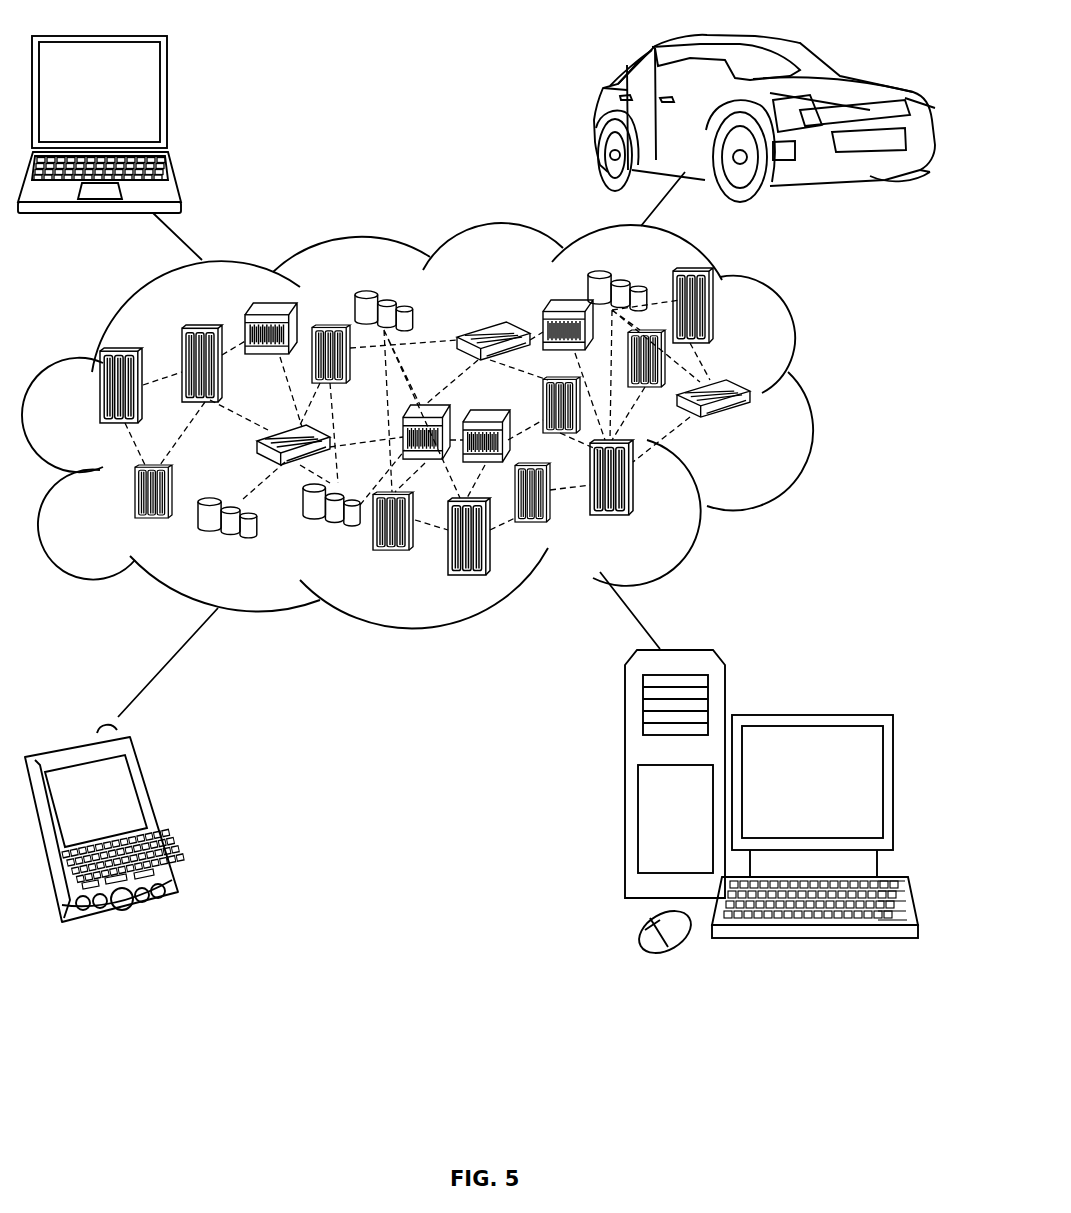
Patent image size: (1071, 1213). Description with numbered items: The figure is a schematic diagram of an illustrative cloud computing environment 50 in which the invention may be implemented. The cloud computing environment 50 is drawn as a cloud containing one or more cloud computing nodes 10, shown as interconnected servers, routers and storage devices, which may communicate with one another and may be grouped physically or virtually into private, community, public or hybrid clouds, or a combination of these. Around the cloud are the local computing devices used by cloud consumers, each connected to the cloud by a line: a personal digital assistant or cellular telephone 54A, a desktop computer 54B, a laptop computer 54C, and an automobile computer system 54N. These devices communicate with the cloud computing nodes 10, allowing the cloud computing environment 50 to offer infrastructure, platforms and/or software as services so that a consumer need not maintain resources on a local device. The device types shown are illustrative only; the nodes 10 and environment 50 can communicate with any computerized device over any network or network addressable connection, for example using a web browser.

The cloud computing node 10 is at (752, 436).
The cloud computing environment 50 is at (810, 397).
The personal digital assistant or cellular telephone 54A is at (156, 816).
The desktop computer 54B is at (810, 713).
The laptop computer 54C is at (168, 100).
The automobile computer system 54N is at (597, 118).